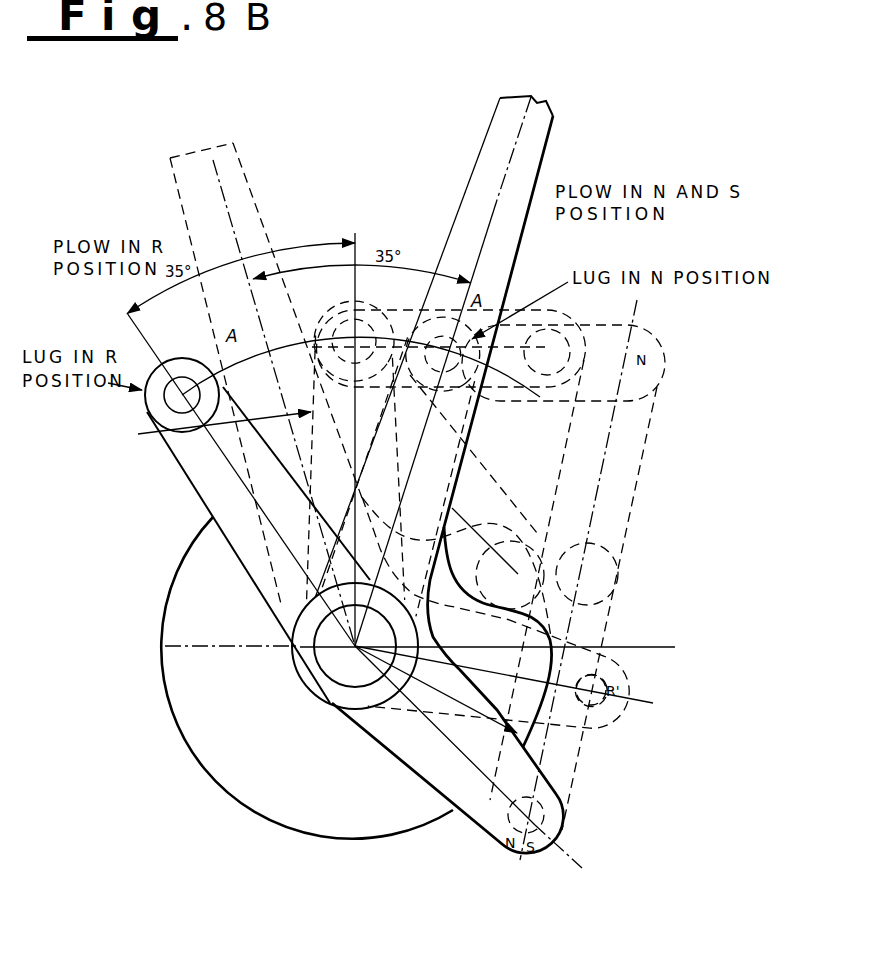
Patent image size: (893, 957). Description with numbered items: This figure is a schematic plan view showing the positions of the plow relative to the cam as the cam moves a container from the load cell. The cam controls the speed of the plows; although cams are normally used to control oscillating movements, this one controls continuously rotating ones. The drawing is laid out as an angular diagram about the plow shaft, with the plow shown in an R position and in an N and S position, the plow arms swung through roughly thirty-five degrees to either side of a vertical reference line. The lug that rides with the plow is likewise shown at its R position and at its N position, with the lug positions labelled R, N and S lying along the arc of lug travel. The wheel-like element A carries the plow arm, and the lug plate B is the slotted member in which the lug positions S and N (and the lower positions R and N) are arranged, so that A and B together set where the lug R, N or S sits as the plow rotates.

The wheel / plow arm (position A) A is at (186, 555).
The lug plate B is at (488, 580).
The lug in R position R is at (510, 575).
The lug in N position N is at (587, 574).
The lug in S position S is at (547, 352).